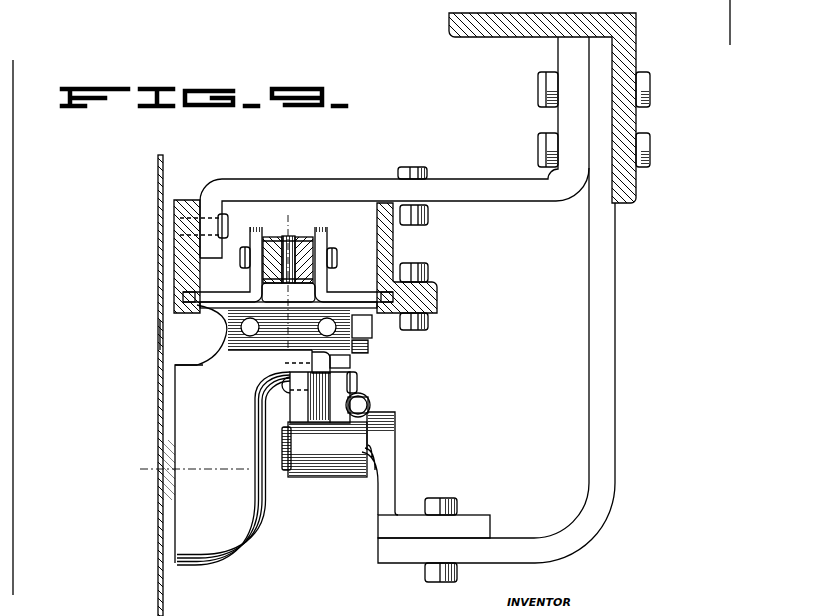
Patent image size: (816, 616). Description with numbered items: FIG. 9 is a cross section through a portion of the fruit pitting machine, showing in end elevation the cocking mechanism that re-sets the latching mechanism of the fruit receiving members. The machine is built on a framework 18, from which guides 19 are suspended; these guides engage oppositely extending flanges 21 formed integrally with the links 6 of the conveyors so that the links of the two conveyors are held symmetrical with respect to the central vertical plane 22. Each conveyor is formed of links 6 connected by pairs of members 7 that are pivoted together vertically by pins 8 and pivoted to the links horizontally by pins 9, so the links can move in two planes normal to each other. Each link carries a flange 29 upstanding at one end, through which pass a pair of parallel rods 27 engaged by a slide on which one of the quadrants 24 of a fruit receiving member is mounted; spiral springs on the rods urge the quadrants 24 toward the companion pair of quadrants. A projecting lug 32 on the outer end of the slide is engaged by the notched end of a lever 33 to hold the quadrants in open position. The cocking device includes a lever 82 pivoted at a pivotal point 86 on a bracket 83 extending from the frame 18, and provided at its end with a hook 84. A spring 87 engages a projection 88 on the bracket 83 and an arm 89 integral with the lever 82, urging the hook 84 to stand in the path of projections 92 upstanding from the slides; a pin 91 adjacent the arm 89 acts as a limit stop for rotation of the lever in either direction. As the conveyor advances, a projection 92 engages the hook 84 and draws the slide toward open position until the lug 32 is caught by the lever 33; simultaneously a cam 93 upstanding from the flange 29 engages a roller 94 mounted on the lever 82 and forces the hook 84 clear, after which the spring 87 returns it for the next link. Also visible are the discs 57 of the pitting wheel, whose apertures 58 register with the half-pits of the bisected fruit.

The framework 18 is at (506, 30).
The guides 19 is at (175, 268).
The flanges 21 is at (214, 298).
The central vertical plane 22 is at (10, 276).
The discs 57 is at (158, 334).
The apertures 58 is at (160, 490).
The links 6 is at (323, 231).
The members 7 is at (315, 243).
The pins 8 is at (290, 247).
The pins 9 is at (337, 257).
The parallel rods 27 is at (323, 333).
The flange 29 is at (240, 338).
The projecting lug 32 is at (372, 335).
The lever 33 is at (368, 349).
The cam 93 is at (350, 362).
The roller 94 is at (353, 377).
The spring 87 is at (370, 392).
The arm 89 is at (375, 405).
The hook 84 is at (293, 363).
The projections 92 is at (286, 383).
The lever 82 is at (295, 405).
The pivotal point 86 is at (283, 443).
The pin 91 is at (395, 420).
The projection 88 is at (388, 493).
The bracket 83 is at (495, 527).
The quadrants 24 is at (230, 505).